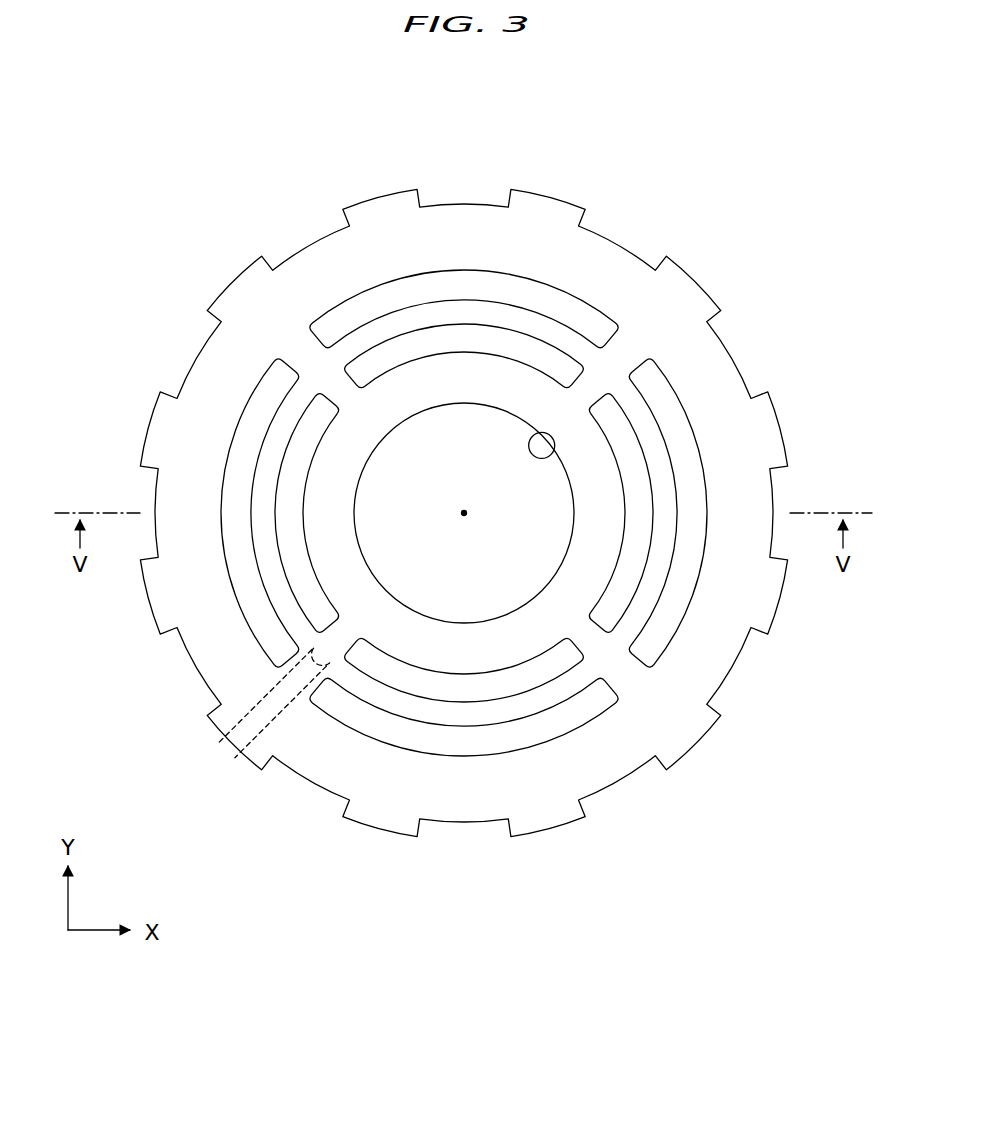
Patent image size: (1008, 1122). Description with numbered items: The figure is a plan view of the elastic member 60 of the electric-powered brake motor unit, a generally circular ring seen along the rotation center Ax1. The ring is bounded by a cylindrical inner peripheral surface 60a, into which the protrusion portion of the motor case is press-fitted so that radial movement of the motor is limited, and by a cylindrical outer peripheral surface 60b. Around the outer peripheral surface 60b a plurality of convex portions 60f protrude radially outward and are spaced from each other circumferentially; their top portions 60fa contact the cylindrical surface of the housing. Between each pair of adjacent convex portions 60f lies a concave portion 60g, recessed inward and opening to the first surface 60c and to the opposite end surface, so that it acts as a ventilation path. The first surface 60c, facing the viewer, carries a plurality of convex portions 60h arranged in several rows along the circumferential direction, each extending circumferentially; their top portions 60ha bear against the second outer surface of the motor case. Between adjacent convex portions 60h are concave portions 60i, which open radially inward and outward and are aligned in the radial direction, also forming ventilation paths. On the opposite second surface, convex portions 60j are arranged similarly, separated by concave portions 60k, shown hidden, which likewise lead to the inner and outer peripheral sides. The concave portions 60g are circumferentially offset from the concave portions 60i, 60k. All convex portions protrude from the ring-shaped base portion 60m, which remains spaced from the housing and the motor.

The elastic member 60 is at (692, 133).
The inner peripheral surface 60a is at (553, 456).
The outer peripheral surface 60b is at (735, 664).
The first surface 60c is at (210, 363).
The convex portion 60f is at (549, 204).
The top portion 60fa is at (153, 597).
The concave portion 60g is at (610, 247).
The convex portion 60h is at (633, 470).
The top portion 60ha is at (323, 418).
The concave portion 60i is at (347, 653).
The convex portion 60j is at (297, 467).
The concave portion 60k is at (210, 736).
The base portion 60m is at (465, 232).
The rotation center Ax1 is at (464, 518).